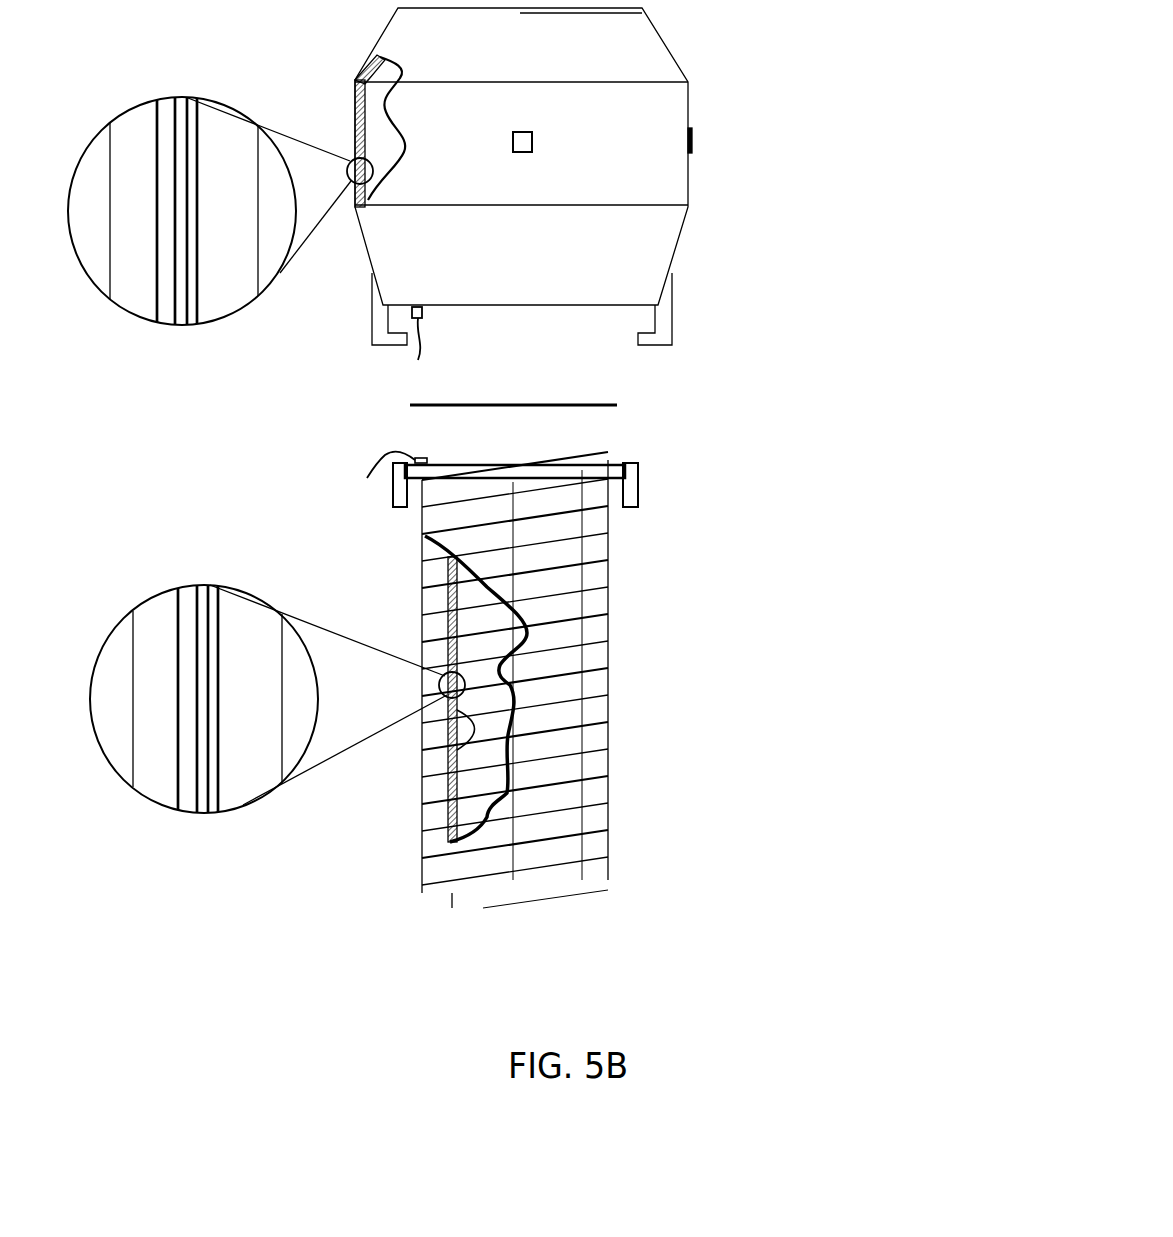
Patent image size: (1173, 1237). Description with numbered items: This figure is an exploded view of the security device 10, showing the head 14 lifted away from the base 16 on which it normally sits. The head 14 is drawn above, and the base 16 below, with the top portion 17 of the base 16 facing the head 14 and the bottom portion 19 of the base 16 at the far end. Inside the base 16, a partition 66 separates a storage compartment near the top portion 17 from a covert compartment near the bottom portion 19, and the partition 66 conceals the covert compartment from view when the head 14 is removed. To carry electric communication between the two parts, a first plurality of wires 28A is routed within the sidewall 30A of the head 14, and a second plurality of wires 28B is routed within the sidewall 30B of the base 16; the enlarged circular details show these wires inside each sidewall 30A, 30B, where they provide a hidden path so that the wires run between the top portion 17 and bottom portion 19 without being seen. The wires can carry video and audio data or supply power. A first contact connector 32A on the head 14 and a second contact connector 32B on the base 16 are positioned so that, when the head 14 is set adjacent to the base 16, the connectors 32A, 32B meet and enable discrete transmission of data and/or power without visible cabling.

The security device 10 is at (857, 0).
The head 14 is at (742, 8).
The base 16 is at (652, 460).
The top portion 17 is at (614, 446).
The bottom portion 19 is at (623, 927).
The first plurality of wires 28A is at (213, 93).
The second plurality of wires 28B is at (235, 574).
The sidewall 30A is at (258, 308).
The sidewall 30B is at (282, 767).
The first contact connector 32A is at (418, 360).
The second contact connector 32B is at (360, 478).
The partition 66 is at (457, 748).